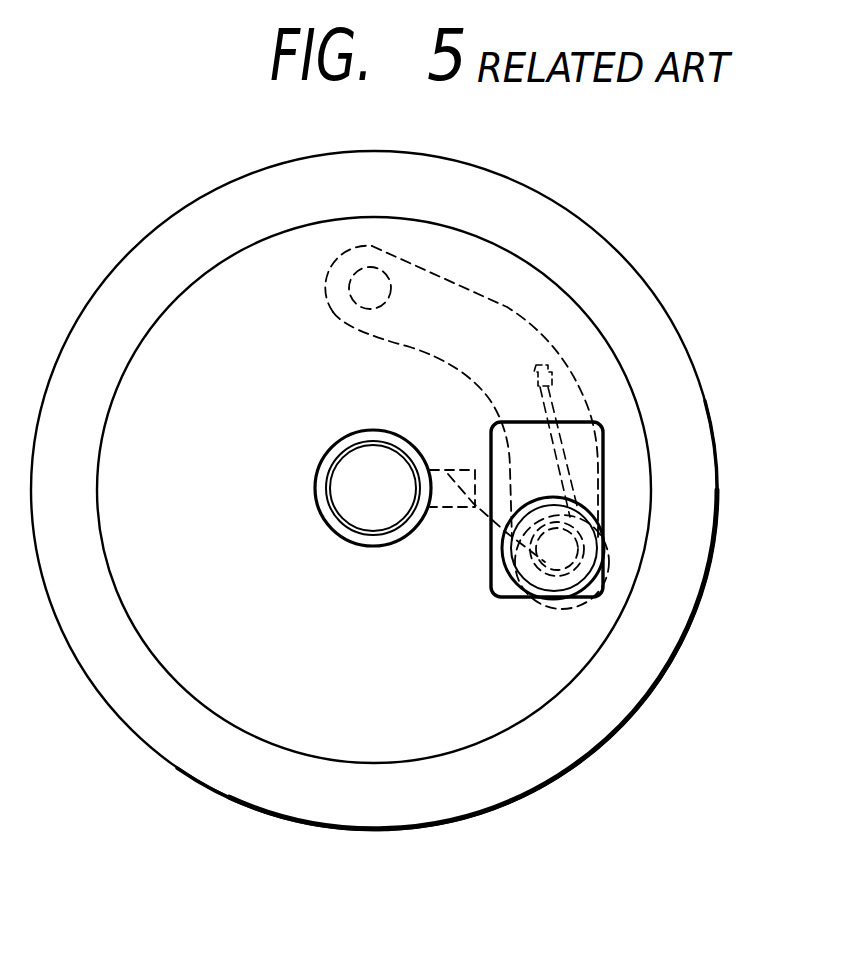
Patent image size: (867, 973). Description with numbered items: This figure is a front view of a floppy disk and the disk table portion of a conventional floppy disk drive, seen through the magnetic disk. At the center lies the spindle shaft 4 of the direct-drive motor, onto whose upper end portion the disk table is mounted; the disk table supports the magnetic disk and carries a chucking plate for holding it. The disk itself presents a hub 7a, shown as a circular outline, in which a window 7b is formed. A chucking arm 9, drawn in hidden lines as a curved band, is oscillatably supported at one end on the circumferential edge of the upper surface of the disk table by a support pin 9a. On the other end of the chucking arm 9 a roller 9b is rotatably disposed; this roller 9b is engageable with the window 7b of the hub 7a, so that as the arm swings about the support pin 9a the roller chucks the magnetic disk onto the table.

The spindle shaft 4 is at (340, 490).
The hub 7a is at (192, 307).
The window 7b is at (598, 487).
The chucking arm 9 is at (508, 307).
The support pin 9a is at (371, 266).
The roller 9b is at (593, 557).